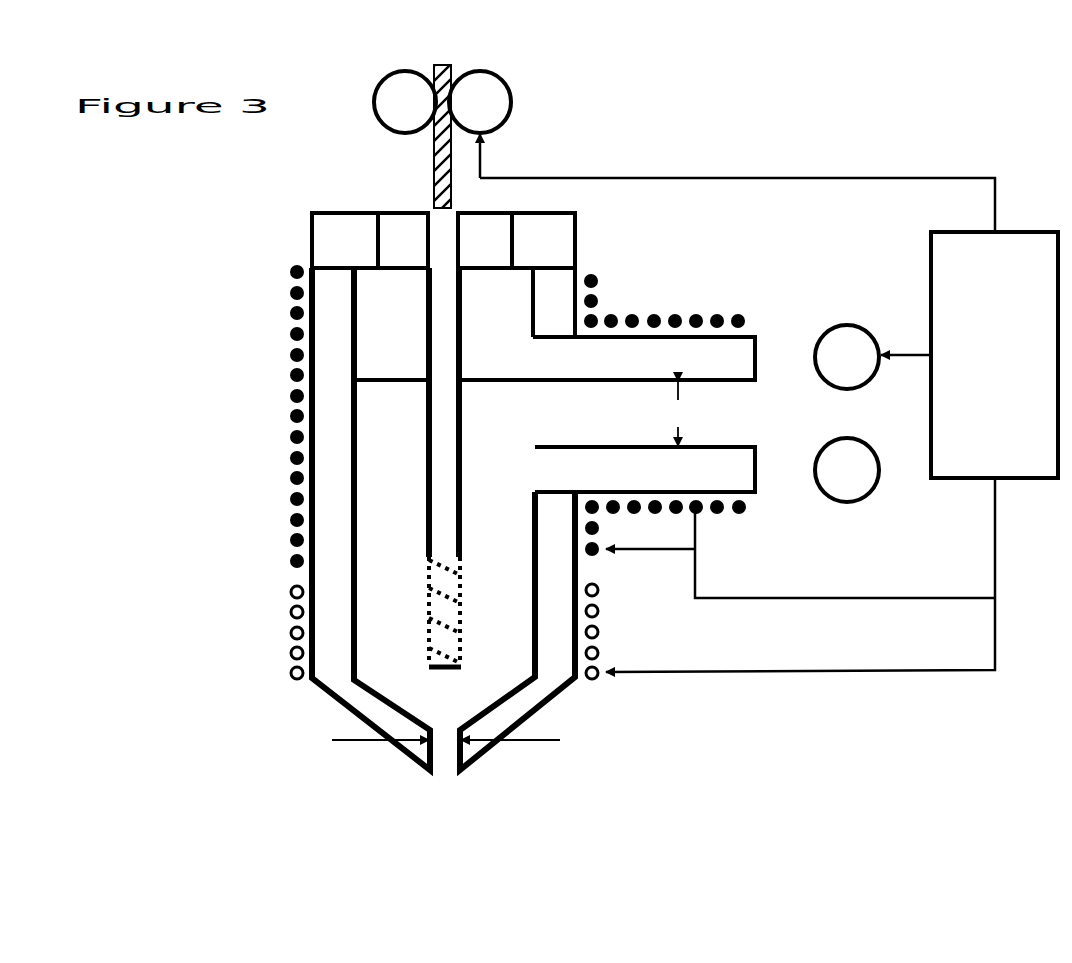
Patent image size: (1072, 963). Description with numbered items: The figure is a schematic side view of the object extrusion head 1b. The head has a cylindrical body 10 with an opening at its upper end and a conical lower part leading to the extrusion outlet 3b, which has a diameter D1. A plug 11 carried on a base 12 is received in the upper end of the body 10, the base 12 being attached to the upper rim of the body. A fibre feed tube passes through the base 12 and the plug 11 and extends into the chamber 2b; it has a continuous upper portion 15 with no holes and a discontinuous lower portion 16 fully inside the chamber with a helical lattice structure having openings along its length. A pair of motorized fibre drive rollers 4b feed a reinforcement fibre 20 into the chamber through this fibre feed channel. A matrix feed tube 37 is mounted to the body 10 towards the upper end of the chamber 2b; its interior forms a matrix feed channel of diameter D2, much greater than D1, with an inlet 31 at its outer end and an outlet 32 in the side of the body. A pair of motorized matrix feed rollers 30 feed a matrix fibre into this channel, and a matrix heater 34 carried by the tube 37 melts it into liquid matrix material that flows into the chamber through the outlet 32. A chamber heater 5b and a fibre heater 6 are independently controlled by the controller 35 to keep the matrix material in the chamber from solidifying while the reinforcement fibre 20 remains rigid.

The object extrusion head 1b is at (245, 505).
The chamber 2b is at (444, 529).
The extrusion outlet 3b is at (445, 758).
The fibre drive rollers 4b is at (418, 73).
The chamber heater 5b is at (292, 414).
The fibre heater 6 is at (290, 651).
The cylindrical body 10 is at (338, 623).
The plug 11 is at (397, 300).
The base 12 is at (332, 238).
The upper portion of fibre feed tube 15 is at (463, 486).
The lower portion of fibre feed tube 16 is at (428, 600).
The reinforcement fibre 20 is at (434, 158).
The matrix feed rollers 30 is at (868, 373).
The inlet 31 is at (740, 416).
The outlet 32 is at (538, 418).
The matrix heater 34 is at (678, 316).
The controller 35 is at (769, 403).
The matrix feed tube 37 is at (592, 355).
The diameter of extrusion outlet D1 is at (446, 740).
The diameter of matrix feed channel D2 is at (677, 413).